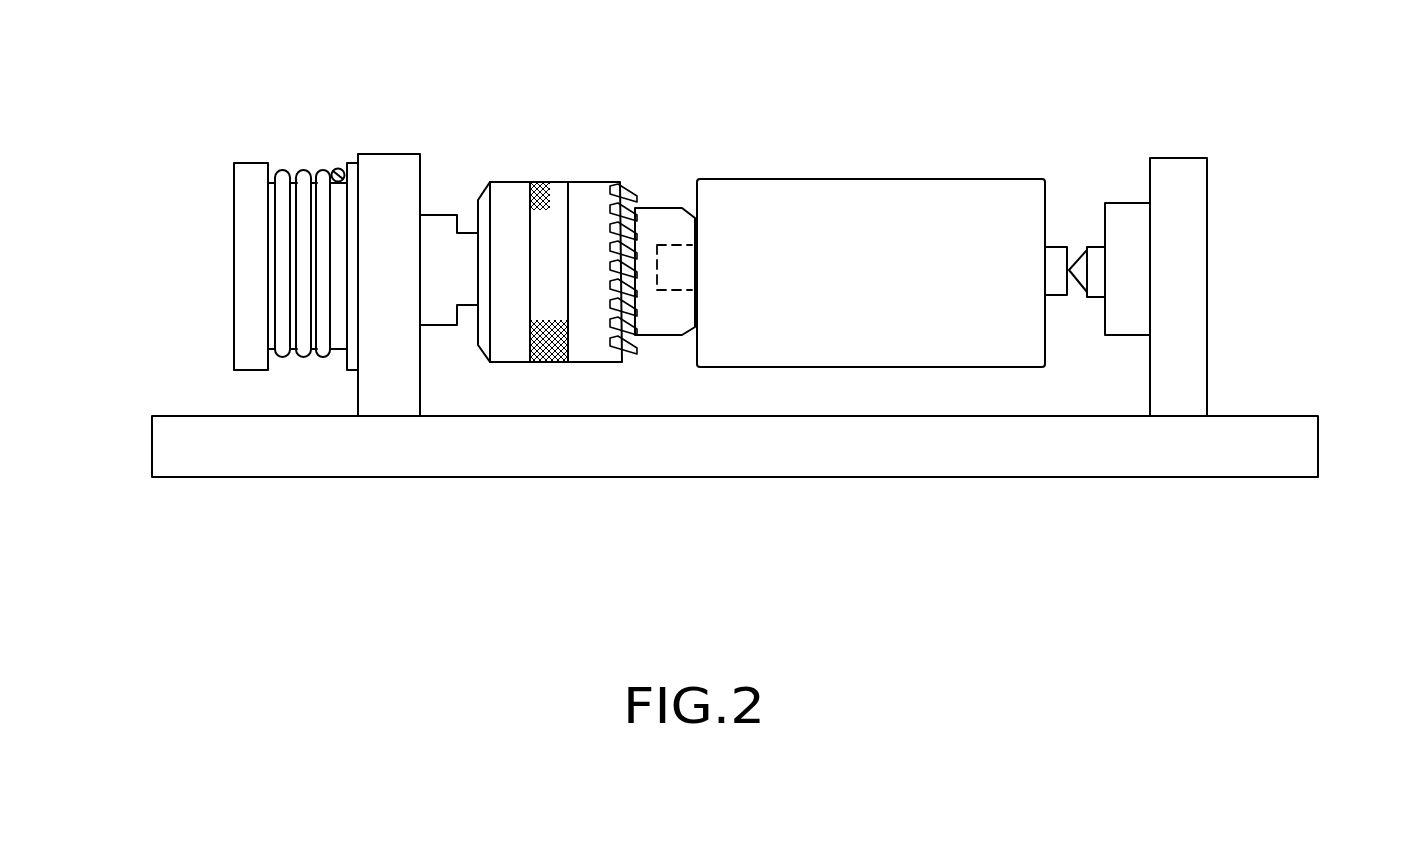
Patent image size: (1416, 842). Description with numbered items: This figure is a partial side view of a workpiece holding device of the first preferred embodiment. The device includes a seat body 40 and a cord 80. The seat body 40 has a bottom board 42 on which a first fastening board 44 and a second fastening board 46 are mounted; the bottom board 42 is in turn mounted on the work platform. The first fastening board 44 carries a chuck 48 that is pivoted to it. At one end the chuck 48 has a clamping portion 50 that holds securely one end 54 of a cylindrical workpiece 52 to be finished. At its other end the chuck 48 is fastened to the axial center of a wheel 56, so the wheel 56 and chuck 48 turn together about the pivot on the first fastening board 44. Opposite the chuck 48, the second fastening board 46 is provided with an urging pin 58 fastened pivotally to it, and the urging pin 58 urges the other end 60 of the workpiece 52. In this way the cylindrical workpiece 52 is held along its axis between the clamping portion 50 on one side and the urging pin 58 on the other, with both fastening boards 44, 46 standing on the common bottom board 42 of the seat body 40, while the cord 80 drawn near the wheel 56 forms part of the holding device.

The seat body 40 is at (1247, 162).
The bottom board 42 is at (393, 455).
The first fastening board 44 is at (393, 175).
The second fastening board 46 is at (1197, 313).
The chuck 48 is at (543, 182).
The clamping portion 50 is at (662, 212).
The cylindrical workpiece 52 is at (802, 198).
The one end of the workpiece 54 is at (665, 290).
The wheel 56 is at (240, 263).
The urging pin 58 is at (1095, 287).
The other end of the workpiece 60 is at (1055, 250).
The cord 80 is at (323, 175).